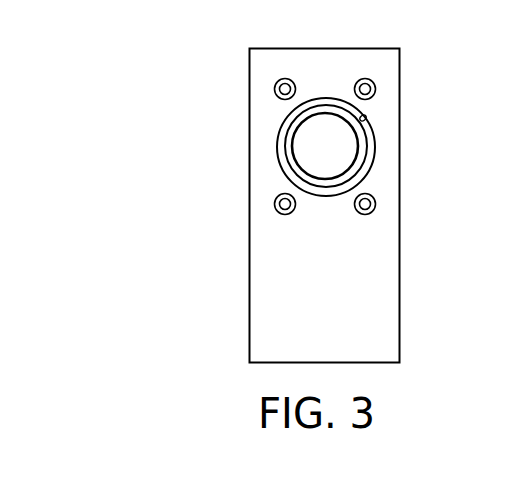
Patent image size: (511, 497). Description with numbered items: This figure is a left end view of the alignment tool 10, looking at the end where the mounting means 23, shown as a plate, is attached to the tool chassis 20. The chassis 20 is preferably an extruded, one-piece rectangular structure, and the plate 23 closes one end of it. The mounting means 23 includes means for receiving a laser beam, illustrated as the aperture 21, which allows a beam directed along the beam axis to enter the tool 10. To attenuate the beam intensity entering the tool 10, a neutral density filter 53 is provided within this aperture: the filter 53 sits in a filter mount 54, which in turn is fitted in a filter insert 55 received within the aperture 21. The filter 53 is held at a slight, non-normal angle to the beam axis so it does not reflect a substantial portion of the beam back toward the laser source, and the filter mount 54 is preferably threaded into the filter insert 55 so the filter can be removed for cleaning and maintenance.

The alignment tool 10 is at (217, 152).
The tool chassis 20 is at (408, 68).
The aperture 21 is at (369, 122).
The mounting means 23 is at (267, 285).
The neutral density filter 53 is at (330, 163).
The filter mount 54 is at (361, 156).
The filter insert 55 is at (374, 143).